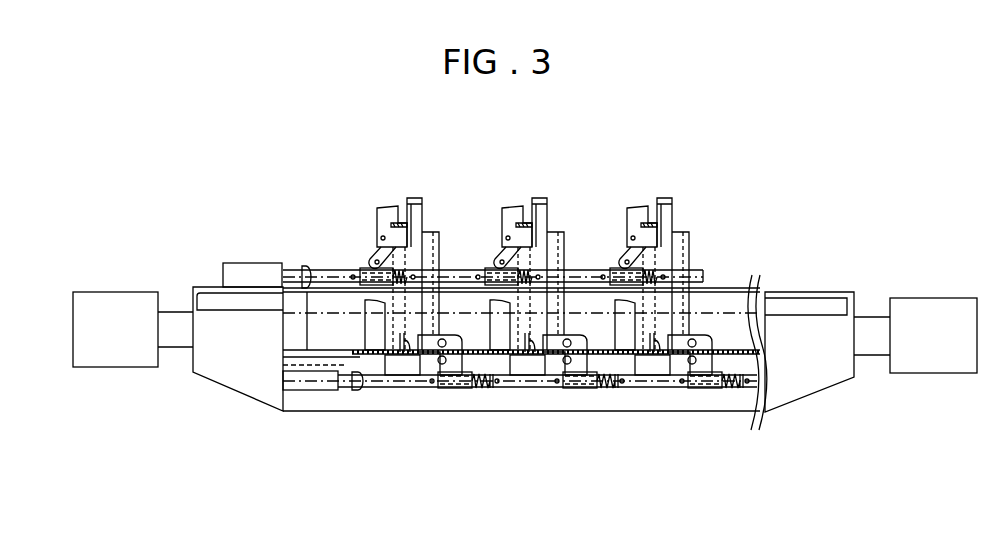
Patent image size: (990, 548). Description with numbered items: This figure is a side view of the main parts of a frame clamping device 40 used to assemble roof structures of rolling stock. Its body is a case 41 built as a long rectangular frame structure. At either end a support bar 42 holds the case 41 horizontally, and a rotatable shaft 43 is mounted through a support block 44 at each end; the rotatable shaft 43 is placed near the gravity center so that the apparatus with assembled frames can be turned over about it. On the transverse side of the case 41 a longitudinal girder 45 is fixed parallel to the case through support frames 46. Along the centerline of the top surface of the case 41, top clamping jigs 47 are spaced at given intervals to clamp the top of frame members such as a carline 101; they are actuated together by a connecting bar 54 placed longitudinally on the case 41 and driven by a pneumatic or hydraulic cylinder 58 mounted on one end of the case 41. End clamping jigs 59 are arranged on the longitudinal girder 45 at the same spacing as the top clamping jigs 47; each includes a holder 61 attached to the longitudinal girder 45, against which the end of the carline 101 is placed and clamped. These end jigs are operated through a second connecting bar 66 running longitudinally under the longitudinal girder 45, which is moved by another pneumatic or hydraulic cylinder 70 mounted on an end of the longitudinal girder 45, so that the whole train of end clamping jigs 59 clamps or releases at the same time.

The frame clamping device 40 is at (542, 127).
The case 41 is at (333, 298).
The support bar 42 is at (207, 297).
The rotatable shaft 43 is at (98, 302).
The support block 44 is at (215, 358).
The longitudinal girder 45 is at (290, 358).
The support frame 46 is at (377, 347).
The top clamping jig 47 is at (420, 214).
The connecting bar 54 is at (340, 272).
The pneumatic or hydraulic cylinder 58 is at (243, 270).
The end clamping jig 59 is at (460, 370).
The holder 61 is at (403, 348).
The connecting bar 66 is at (391, 360).
The pneumatic or hydraulic cylinder 70 is at (322, 383).
The carline 101 is at (405, 212).